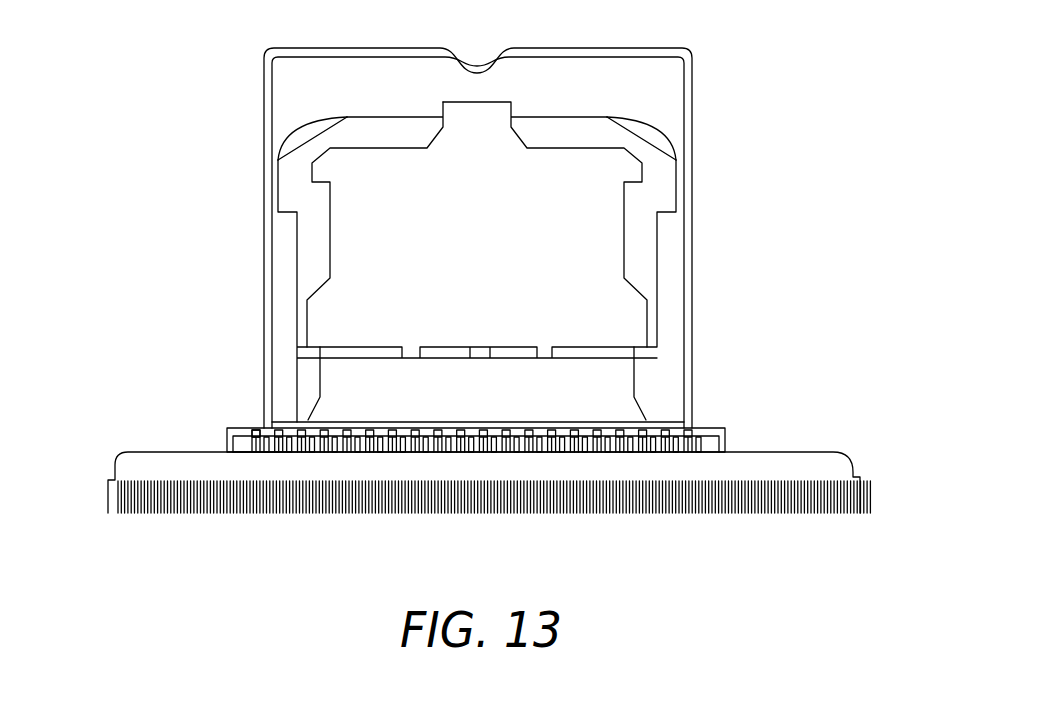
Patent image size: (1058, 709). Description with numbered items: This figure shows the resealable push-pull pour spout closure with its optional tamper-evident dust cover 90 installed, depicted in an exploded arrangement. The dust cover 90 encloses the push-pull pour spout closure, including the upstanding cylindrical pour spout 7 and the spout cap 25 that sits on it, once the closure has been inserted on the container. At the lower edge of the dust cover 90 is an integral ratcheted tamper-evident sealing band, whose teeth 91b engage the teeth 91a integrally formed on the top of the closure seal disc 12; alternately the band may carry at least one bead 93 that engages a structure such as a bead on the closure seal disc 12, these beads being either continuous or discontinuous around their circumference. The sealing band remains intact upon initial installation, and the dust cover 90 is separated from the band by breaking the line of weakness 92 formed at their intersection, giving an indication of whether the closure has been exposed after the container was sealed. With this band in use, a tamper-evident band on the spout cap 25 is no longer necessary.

The dust cover 90 is at (693, 88).
The spout cap 25 is at (667, 188).
The pour spout 7 is at (335, 170).
The bead 93 is at (667, 428).
The line of weakness 92 is at (706, 428).
The closure seal disc 12 is at (772, 452).
The teeth 91a is at (275, 452).
The teeth 91b is at (260, 430).